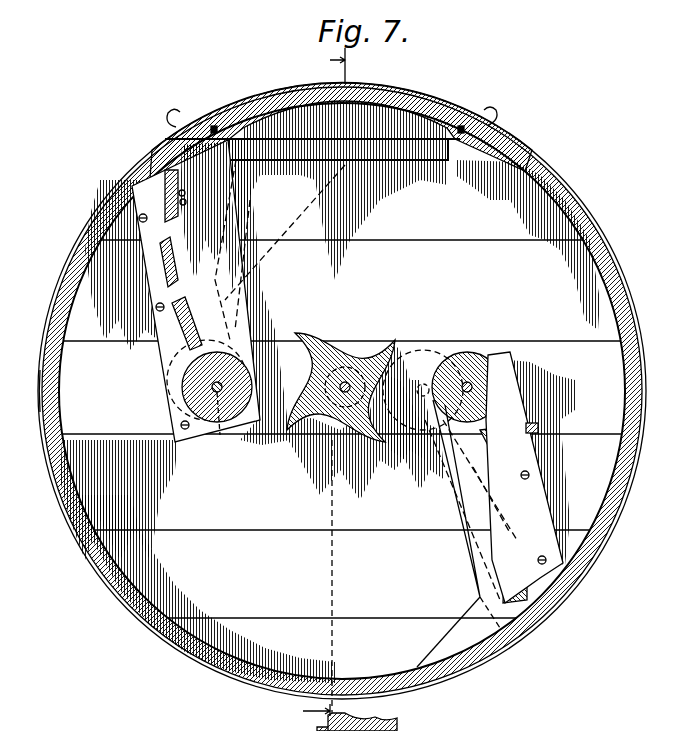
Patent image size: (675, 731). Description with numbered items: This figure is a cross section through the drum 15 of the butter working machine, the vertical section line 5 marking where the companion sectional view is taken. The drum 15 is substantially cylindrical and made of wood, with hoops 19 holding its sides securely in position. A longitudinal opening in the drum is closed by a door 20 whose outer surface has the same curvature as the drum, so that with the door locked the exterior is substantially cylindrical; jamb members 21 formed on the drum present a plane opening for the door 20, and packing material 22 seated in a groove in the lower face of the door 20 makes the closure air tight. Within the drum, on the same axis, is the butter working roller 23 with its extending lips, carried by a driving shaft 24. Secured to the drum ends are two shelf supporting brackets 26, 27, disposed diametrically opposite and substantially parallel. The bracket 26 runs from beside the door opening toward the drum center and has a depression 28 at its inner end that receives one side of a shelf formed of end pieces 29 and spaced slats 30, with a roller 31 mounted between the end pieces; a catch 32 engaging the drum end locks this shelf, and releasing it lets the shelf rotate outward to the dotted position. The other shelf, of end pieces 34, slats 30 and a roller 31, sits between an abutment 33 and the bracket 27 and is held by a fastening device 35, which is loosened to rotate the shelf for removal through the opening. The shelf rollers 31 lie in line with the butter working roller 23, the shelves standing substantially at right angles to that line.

The section line 5 is at (316, 384).
The drum 15 is at (92, 228).
The hoops 19 is at (40, 386).
The door 20 is at (358, 88).
The jamb members 21 is at (190, 125).
The packing material 22 is at (215, 125).
The butter working roller 23 is at (338, 338).
The driving shaft 24 is at (333, 455).
The shelf supporting bracket 26 is at (150, 272).
The shelf supporting bracket 27 is at (512, 405).
The depression 28 is at (220, 435).
The end pieces 29 is at (233, 278).
The slats 30 is at (175, 260).
The roller 31 is at (185, 390).
The catch 32 is at (187, 200).
The abutment 33 is at (470, 617).
The end pieces 34 is at (470, 498).
The fastening device 35 is at (538, 428).